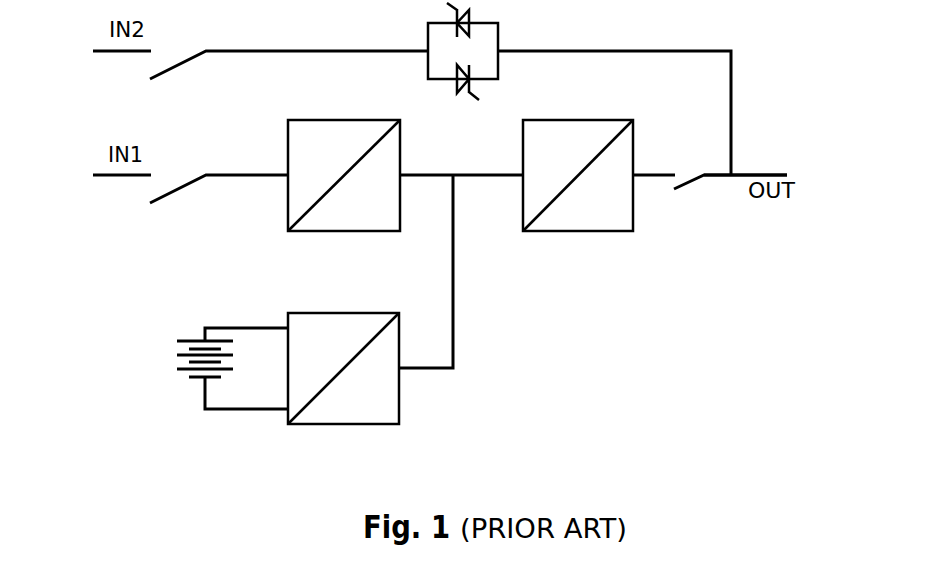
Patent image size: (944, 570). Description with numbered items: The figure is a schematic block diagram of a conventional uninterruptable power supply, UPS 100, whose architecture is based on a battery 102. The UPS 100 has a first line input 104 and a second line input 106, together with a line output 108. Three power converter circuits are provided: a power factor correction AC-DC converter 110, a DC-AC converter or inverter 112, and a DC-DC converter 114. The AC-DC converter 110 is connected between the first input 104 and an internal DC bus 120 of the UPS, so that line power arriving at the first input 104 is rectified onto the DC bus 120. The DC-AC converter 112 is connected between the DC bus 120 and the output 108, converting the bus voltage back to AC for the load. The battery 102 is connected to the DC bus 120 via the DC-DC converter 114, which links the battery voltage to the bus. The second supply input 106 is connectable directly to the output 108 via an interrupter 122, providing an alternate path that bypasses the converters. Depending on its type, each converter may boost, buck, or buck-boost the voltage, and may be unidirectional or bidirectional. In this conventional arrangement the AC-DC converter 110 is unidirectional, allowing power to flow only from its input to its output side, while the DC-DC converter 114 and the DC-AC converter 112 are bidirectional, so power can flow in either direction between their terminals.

The uninterruptable power supply (UPS) 100 is at (527, 410).
The battery 102 is at (178, 369).
The first line input 104 is at (208, 175).
The second line input 106 is at (240, 51).
The line output 108 is at (760, 175).
The power factor correction AC-DC converter 110 is at (288, 196).
The DC-AC converter 112 is at (587, 231).
The DC-DC converter 114 is at (312, 424).
The internal DC bus 120 is at (418, 175).
The interrupter 122 is at (475, 17).